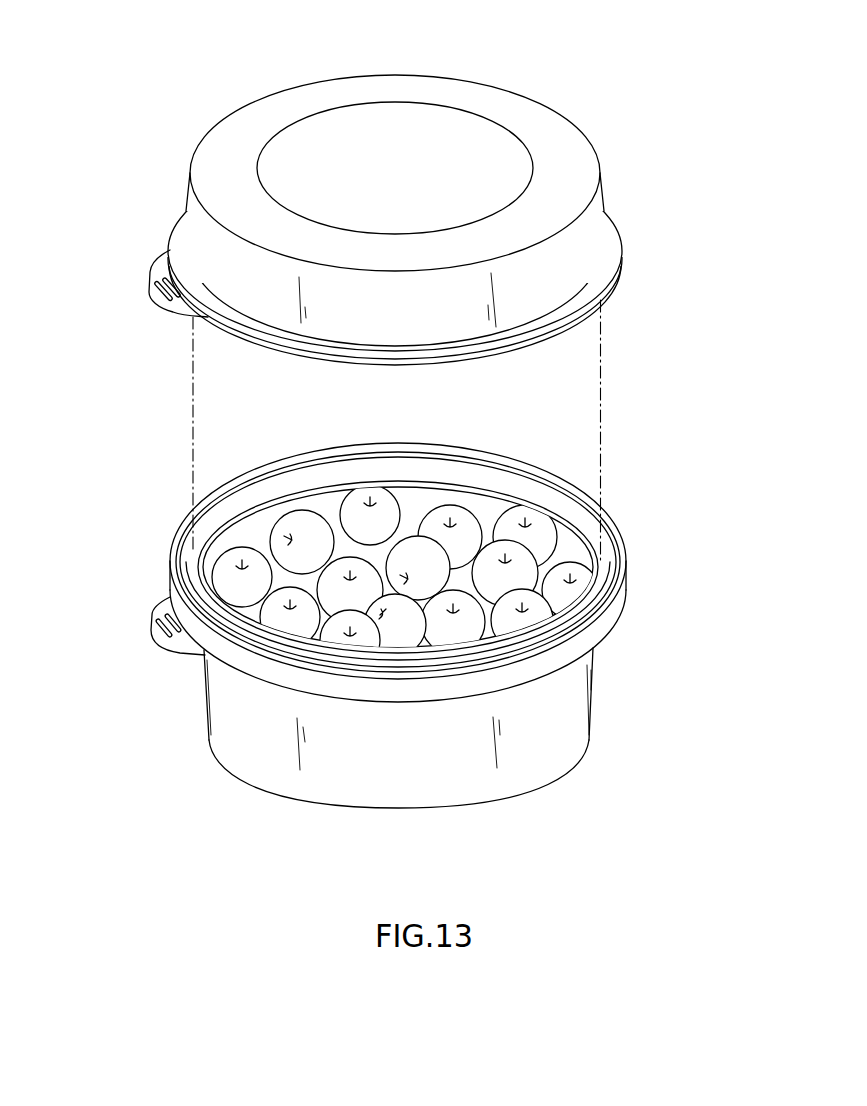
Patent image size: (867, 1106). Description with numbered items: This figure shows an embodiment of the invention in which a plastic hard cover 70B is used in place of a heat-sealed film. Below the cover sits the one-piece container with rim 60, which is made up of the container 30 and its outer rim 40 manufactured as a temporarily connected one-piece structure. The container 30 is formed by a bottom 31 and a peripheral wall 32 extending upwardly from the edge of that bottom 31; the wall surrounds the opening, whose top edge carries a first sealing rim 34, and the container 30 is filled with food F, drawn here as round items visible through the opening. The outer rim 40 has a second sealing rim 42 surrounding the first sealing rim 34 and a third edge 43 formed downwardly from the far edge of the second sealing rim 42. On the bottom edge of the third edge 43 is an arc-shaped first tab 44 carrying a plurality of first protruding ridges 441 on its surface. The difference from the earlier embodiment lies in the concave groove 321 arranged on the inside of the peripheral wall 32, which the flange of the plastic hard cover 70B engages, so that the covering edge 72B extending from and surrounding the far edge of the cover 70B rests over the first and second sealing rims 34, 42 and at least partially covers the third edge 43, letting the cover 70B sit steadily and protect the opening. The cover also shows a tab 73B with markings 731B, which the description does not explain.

The plastic hard cover 70B is at (376, 191).
The covering edge 72B is at (614, 244).
The tab of lid 73B is at (126, 264).
The slots of lid tab 731B is at (160, 291).
The one-piece container with rim 60 is at (410, 614).
The outer rim 40 is at (387, 557).
The second sealing rim 42 is at (398, 561).
The third edge 43 is at (597, 625).
The first tab 44 is at (133, 601).
The first protruding ridges 441 is at (163, 624).
The first sealing rim 34 is at (546, 464).
The container 30 is at (436, 614).
The bottom 31 is at (517, 800).
The peripheral wall 32 is at (596, 697).
The concave groove 321 is at (457, 493).
The food F is at (297, 520).